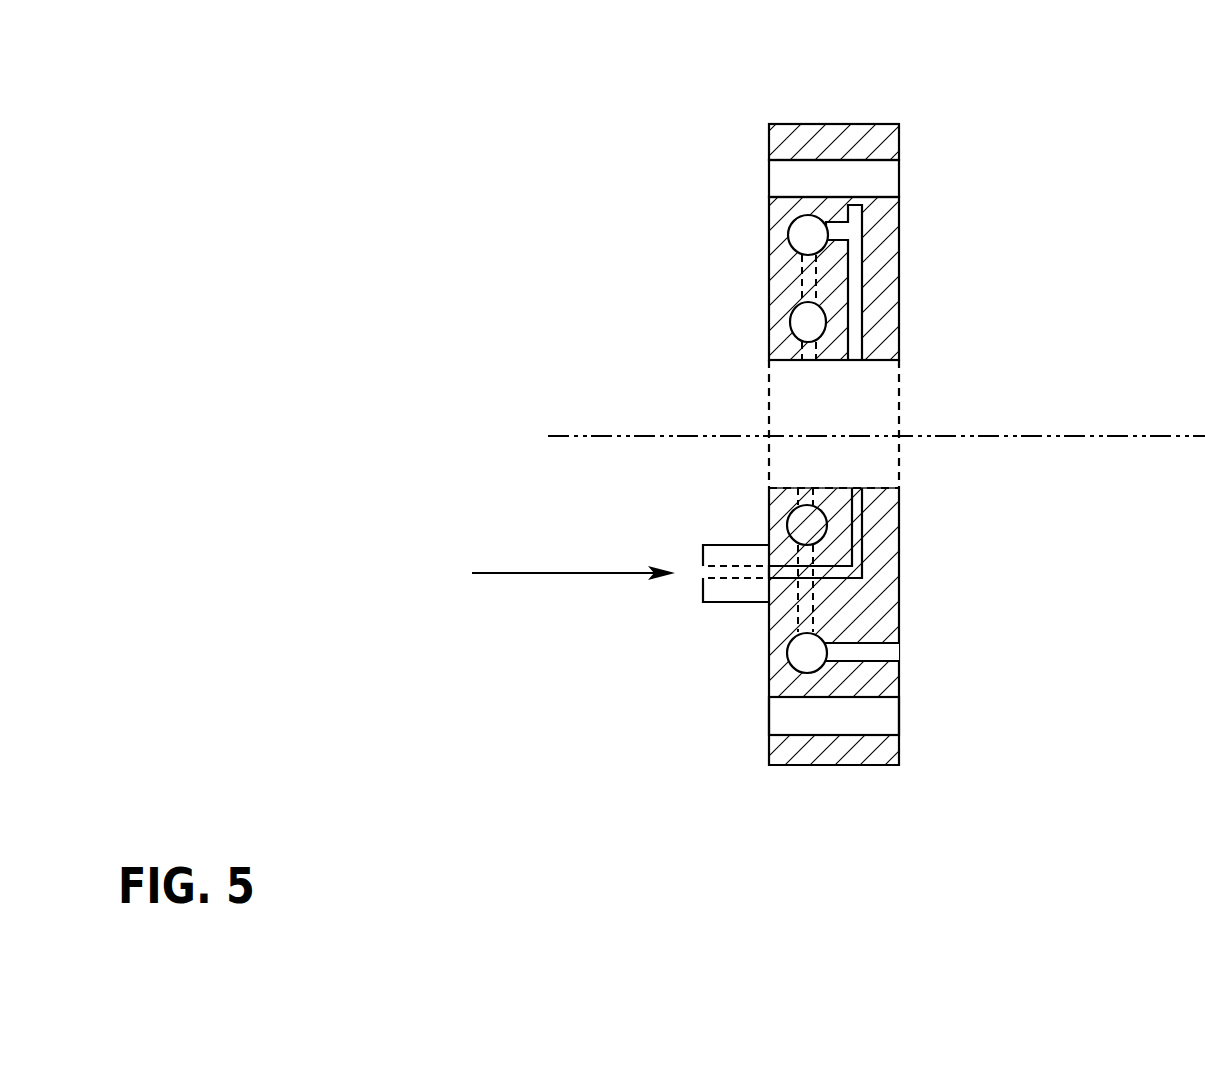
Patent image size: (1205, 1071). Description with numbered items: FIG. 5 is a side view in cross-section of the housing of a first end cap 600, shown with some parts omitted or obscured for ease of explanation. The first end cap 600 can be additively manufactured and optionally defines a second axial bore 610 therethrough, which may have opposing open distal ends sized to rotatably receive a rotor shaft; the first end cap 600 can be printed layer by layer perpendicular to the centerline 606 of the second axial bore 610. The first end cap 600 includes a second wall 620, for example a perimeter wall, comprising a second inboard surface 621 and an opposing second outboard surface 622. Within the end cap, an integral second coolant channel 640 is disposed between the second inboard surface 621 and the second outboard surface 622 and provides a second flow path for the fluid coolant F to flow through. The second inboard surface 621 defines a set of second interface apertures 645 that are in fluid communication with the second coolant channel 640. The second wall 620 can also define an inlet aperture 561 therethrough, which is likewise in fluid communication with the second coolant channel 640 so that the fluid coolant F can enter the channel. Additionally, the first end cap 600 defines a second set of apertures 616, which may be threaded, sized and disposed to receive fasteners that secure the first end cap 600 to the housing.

The first end cap 600 is at (731, 110).
The second wall 620 is at (866, 144).
The second set of apertures 616 is at (900, 176).
The second inboard surface 621 is at (900, 298).
The second outboard surface 622 is at (770, 278).
The second coolant channel 640 is at (805, 238).
The second axial bore 610 is at (790, 455).
The centerline 606 is at (1042, 435).
The second interface apertures 645 is at (900, 650).
The inlet aperture 561 is at (768, 567).
The fluid coolant F is at (500, 573).